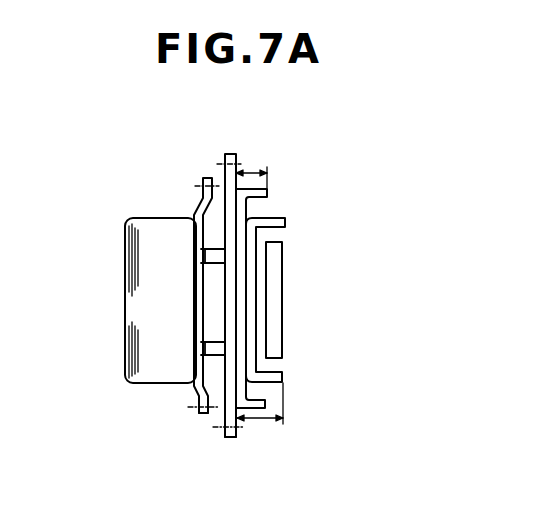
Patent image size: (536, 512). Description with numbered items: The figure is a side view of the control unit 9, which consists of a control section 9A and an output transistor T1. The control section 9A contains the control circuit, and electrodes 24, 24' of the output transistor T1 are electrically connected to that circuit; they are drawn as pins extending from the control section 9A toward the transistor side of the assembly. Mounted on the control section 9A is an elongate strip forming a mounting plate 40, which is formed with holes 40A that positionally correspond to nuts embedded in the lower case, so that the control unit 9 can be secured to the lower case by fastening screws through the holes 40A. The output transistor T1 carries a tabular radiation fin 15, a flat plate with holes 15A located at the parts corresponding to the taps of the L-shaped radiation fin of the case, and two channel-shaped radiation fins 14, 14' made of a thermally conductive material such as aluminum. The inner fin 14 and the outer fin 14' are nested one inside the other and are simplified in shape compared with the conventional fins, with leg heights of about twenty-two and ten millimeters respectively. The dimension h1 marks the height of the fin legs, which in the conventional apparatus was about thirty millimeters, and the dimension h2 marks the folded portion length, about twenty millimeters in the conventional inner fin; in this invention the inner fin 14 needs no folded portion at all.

The control unit 9 is at (158, 194).
The control section 9A is at (125, 300).
The electrode 24 is at (189, 253).
The electrode 24' is at (187, 347).
The mounting plate 40 is at (196, 388).
The hole 40A is at (201, 410).
The tabular radiation fin 15 is at (236, 154).
The hole 15A is at (238, 435).
The channel-shaped radiation fin 14 is at (294, 290).
The channel-shaped radiation fin 14' is at (283, 285).
The output transistor T1 is at (283, 300).
The height of radiation fin h1 is at (268, 171).
The length of folded portion h2 is at (289, 417).